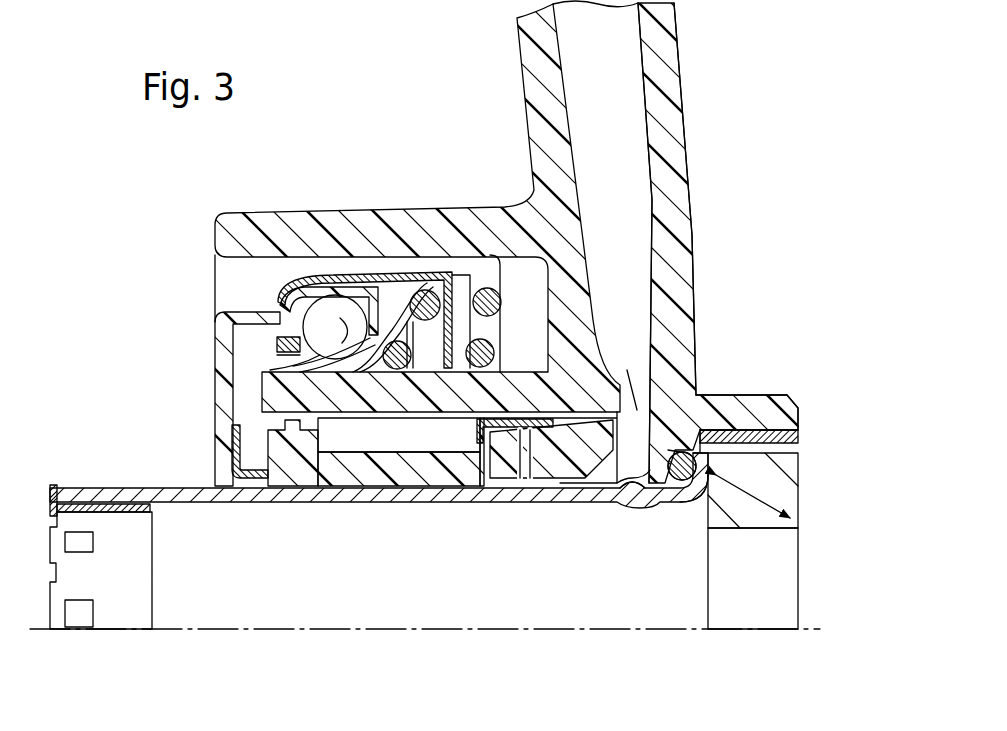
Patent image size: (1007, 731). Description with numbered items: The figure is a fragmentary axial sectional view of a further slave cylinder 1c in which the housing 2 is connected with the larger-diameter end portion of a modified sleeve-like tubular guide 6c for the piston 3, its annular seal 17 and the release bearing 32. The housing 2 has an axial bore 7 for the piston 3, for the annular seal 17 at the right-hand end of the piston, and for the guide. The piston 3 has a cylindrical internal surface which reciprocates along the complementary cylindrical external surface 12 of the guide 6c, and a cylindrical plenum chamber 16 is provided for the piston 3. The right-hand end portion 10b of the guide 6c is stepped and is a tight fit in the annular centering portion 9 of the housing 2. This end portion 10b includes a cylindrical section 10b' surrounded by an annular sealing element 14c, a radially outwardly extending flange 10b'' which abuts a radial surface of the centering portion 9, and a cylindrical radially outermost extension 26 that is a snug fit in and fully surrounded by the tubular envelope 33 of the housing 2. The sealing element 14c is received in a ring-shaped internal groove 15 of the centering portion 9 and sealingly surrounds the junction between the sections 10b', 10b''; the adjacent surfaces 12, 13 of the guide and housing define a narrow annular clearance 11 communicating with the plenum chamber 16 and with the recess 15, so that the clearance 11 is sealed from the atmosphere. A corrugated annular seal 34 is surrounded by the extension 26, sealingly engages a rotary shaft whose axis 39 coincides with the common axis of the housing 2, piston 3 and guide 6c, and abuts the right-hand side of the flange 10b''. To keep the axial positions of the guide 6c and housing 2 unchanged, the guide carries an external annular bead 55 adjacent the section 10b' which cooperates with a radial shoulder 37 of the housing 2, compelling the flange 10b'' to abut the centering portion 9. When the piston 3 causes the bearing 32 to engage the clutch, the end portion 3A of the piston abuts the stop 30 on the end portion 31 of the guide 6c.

The slave cylinder 1c is at (698, 110).
The housing 2 is at (520, 79).
The piston 3 is at (366, 476).
The end portion of the piston 3A is at (288, 470).
The tubular guide 6c is at (175, 478).
The axial bore 7 is at (455, 420).
The centering portion 9 is at (647, 487).
The end portion of the guide 10b is at (801, 522).
The cylindrical section 10b' is at (722, 529).
The flange 10b'' is at (778, 461).
The annular clearance 11 is at (662, 485).
The cylindrical external surface 12 is at (120, 487).
The internal surface 13 is at (682, 466).
The annular sealing element 14c is at (697, 440).
The internal groove 15 is at (673, 453).
The plenum chamber 16 is at (391, 432).
The annular seal 17 is at (565, 465).
The cylindrical extension 26 is at (800, 437).
The stop 30 is at (122, 612).
The end portion of the guide 31 is at (63, 485).
The release bearing 32 is at (285, 291).
The tubular envelope 33 is at (770, 412).
The corrugated annular seal 34 is at (780, 482).
The radial shoulder 37 is at (637, 453).
The axis 39 is at (770, 629).
The annular bead 55 is at (632, 490).